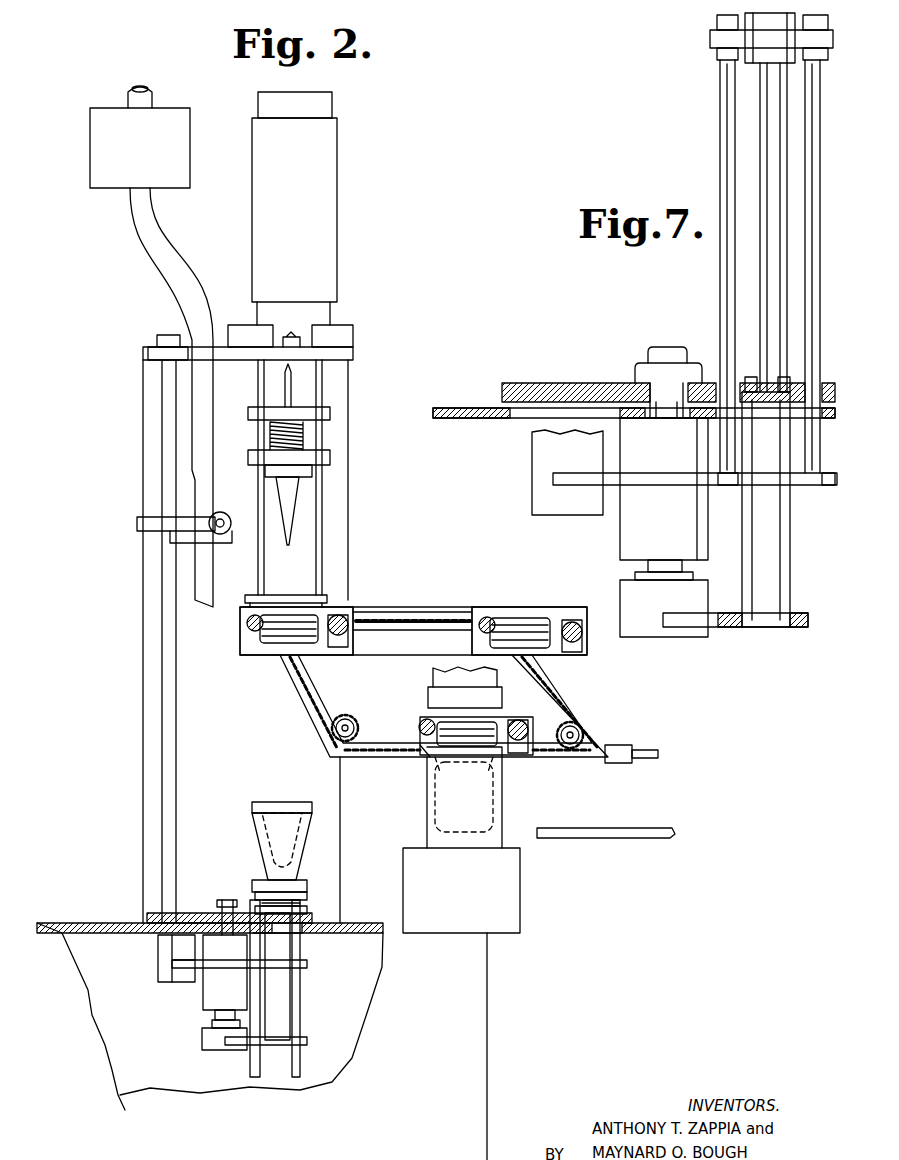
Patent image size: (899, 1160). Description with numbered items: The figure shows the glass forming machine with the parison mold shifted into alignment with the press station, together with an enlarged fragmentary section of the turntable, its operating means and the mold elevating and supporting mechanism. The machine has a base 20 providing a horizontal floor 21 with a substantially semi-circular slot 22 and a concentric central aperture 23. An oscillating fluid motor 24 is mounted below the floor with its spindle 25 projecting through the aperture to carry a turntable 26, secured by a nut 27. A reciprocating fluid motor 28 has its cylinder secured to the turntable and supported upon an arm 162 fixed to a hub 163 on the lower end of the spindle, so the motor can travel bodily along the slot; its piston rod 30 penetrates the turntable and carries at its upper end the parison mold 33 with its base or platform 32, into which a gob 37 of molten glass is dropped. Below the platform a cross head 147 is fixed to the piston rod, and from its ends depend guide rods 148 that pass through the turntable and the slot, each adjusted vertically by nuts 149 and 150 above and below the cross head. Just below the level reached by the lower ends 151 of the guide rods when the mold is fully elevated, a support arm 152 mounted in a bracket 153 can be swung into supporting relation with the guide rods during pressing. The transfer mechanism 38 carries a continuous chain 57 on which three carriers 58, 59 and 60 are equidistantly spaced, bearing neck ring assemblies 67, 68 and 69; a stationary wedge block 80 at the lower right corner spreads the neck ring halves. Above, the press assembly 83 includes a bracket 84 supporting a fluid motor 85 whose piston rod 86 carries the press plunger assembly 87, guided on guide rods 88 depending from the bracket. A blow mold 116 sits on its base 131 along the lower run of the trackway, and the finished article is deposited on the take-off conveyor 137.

In FIG. 2, the base 20 is at (487, 1012).
In FIG. 2, the horizontal floor 21 is at (362, 936).
In FIG. 7, the horizontal floor 21 is at (490, 420).
In FIG. 2, the semi-circular slot 22 is at (300, 935).
In FIG. 7, the semi-circular slot 22 is at (715, 428).
In FIG. 2, the central aperture 23 is at (220, 905).
In FIG. 7, the central aperture 23 is at (655, 420).
In FIG. 2, the oscillating fluid motor 24 is at (205, 995).
In FIG. 7, the oscillating fluid motor 24 is at (676, 531).
In FIG. 2, the spindle 25 is at (227, 900).
In FIG. 7, the spindle 25 is at (668, 412).
In FIG. 2, the turntable 26 is at (178, 912).
In FIG. 7, the turntable 26 is at (528, 382).
In FIG. 7, the nut 27 is at (636, 375).
In FIG. 2, the reciprocating fluid motor 28 is at (285, 996).
In FIG. 7, the reciprocating fluid motor 28 is at (790, 556).
In FIG. 7, the piston rod 30 is at (762, 288).
In FIG. 2, the base or platform 32 is at (307, 886).
In FIG. 2, the parison mold 33 is at (262, 838).
In FIG. 2, the gob 37 is at (300, 852).
In FIG. 2, the transfer mechanism 38 is at (425, 603).
In FIG. 2, the chain 57 is at (364, 625).
In FIG. 2, the carrier 58 is at (240, 636).
In FIG. 2, the carrier 59 is at (508, 721).
In FIG. 2, the carrier 60 is at (565, 612).
In FIG. 2, the neck ring assembly 67 is at (258, 645).
In FIG. 2, the neck ring assembly 68 is at (425, 750).
In FIG. 2, the neck ring assembly 69 is at (490, 640).
In FIG. 2, the wedge block 80 is at (620, 763).
In FIG. 2, the press assembly 83 is at (360, 291).
In FIG. 2, the bracket 84 is at (354, 355).
In FIG. 2, the fluid motor 85 is at (262, 181).
In FIG. 2, the piston rod 86 is at (290, 378).
In FIG. 2, the press plunger assembly 87 is at (356, 439).
In FIG. 2, the guide rods 88 is at (258, 378).
In FIG. 2, the blow mold 116 is at (503, 805).
In FIG. 2, the base 131 is at (510, 902).
In FIG. 2, the take-off conveyor 137 is at (598, 838).
In FIG. 7, the cross head 147 is at (710, 40).
In FIG. 2, the guide rods 148 is at (300, 1020).
In FIG. 7, the guide rods 148 is at (720, 128).
In FIG. 7, the nut 149 is at (716, 24).
In FIG. 7, the nut 150 is at (718, 58).
In FIG. 7, the lower ends 151 is at (728, 485).
In FIG. 2, the support arm 152 is at (230, 968).
In FIG. 7, the support arm 152 is at (640, 483).
In FIG. 2, the bracket 153 is at (165, 950).
In FIG. 7, the bracket 153 is at (538, 475).
In FIG. 2, the arm 162 is at (305, 1043).
In FIG. 7, the arm 162 is at (715, 628).
In FIG. 2, the hub 163 is at (210, 1040).
In FIG. 7, the hub 163 is at (648, 630).